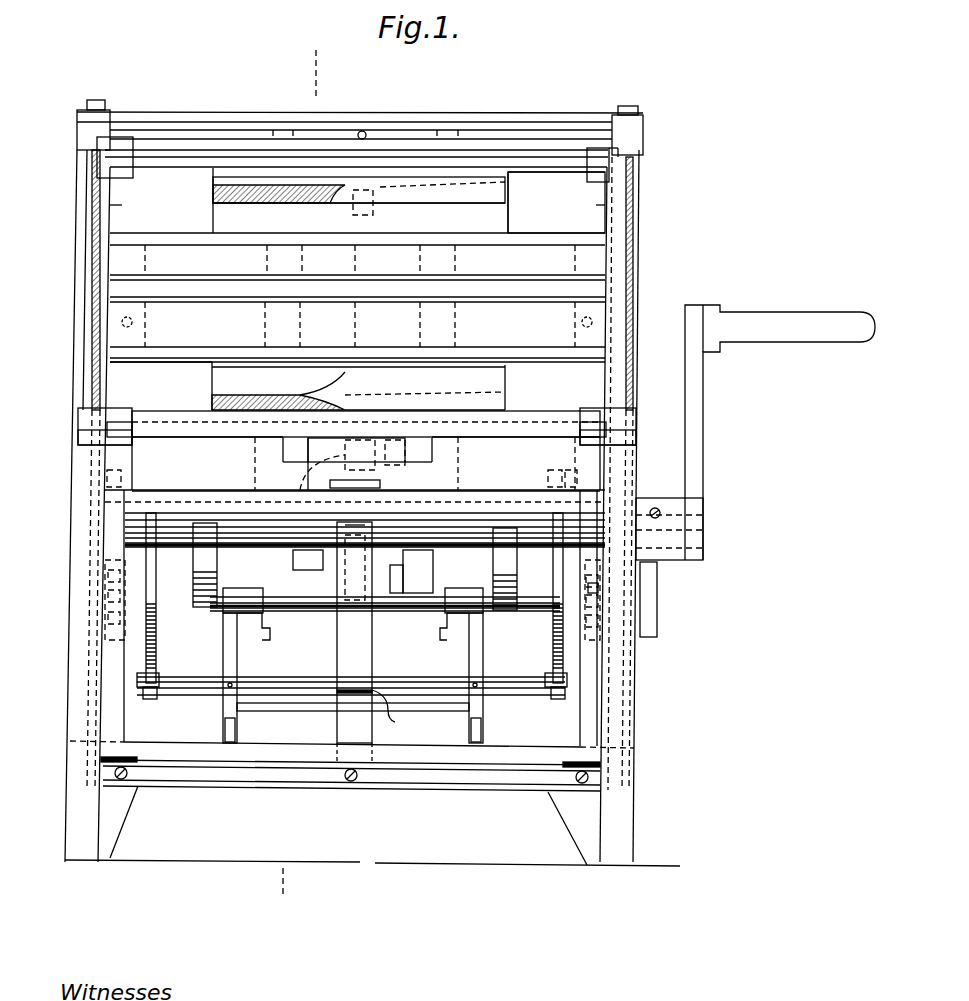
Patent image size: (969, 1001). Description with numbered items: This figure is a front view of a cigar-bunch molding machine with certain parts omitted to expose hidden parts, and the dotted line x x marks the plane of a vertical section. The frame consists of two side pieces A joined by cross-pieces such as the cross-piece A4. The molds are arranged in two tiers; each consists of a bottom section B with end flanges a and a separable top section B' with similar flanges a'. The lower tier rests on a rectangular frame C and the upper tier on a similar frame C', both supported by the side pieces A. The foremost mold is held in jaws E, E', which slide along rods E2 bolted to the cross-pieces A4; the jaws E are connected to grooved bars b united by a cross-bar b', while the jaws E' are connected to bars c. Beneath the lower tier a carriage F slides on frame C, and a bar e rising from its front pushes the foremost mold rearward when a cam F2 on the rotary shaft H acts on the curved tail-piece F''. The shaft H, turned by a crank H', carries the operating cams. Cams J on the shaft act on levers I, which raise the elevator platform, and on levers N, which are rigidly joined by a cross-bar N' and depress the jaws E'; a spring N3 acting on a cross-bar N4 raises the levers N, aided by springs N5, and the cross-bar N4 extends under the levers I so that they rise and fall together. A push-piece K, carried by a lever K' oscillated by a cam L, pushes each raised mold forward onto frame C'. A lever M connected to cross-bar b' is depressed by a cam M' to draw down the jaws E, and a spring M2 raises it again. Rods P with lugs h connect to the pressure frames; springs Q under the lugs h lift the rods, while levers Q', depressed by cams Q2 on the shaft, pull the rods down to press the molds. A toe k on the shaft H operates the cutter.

The dotted line x is at (299, 476).
The side piece A is at (356, 481).
The rod E2 is at (650, 357).
The cross-piece A4 is at (428, 800).
The jaw E is at (357, 169).
The bar b is at (359, 213).
The flange a' is at (366, 288).
The flange a is at (357, 331).
The bottom section B is at (358, 293).
The top section B' is at (307, 279).
The push-piece K is at (556, 202).
The lever K' is at (359, 208).
The frame C' is at (352, 505).
The carriage F is at (366, 428).
The bar e is at (434, 408).
The frame C is at (353, 464).
The cam L is at (356, 450).
The cam M' is at (339, 465).
The cam F2 is at (367, 464).
The jaw E' is at (357, 451).
The rotary shaft H is at (355, 518).
The cross-bar b' is at (355, 505).
The cam J is at (355, 566).
The spring M2 is at (354, 642).
The tail-piece F'' is at (363, 571).
The lever M is at (385, 613).
The lever I is at (352, 606).
The lever N is at (353, 678).
The cross-bar N4 is at (470, 679).
The cross-bar N' is at (353, 709).
The spring N3 is at (393, 710).
The bar c is at (352, 618).
The spring N5 is at (140, 766).
The crank H' is at (755, 432).
The toe k is at (648, 599).
The lug h is at (598, 588).
The rod P is at (610, 600).
The cam Q2 is at (105, 552).
The lever Q' is at (353, 581).
The spring Q is at (353, 609).